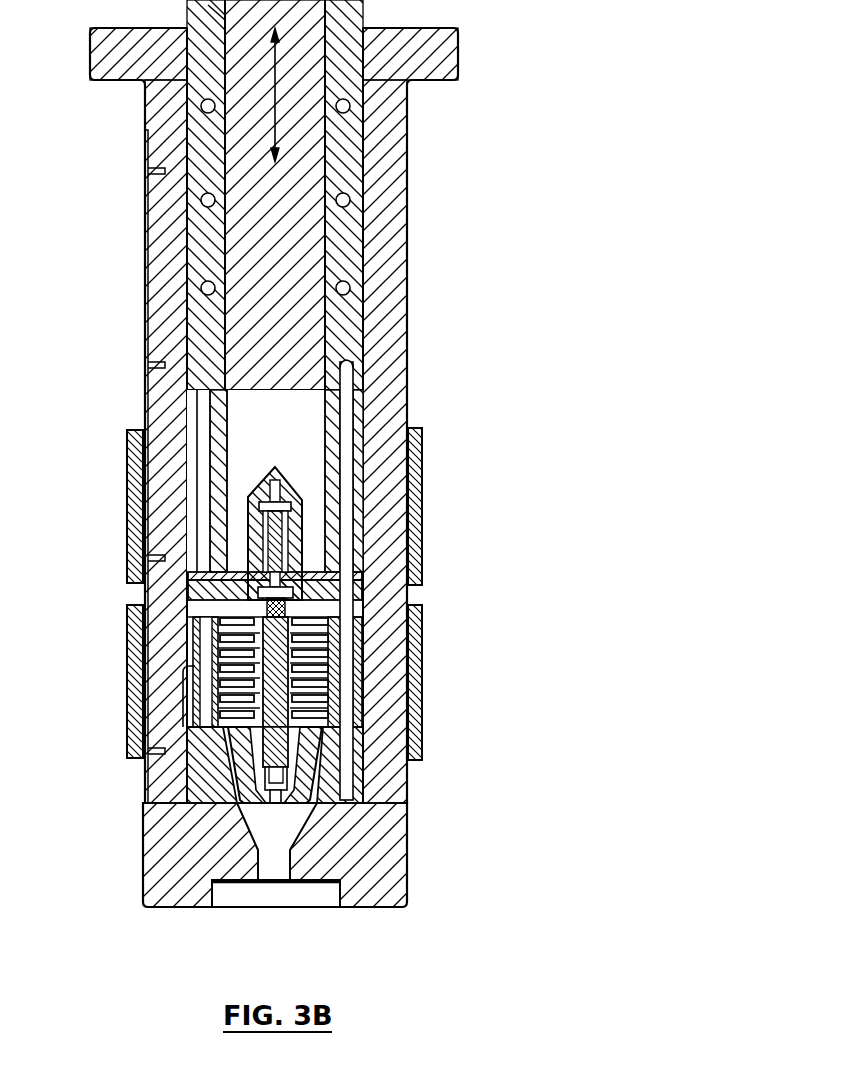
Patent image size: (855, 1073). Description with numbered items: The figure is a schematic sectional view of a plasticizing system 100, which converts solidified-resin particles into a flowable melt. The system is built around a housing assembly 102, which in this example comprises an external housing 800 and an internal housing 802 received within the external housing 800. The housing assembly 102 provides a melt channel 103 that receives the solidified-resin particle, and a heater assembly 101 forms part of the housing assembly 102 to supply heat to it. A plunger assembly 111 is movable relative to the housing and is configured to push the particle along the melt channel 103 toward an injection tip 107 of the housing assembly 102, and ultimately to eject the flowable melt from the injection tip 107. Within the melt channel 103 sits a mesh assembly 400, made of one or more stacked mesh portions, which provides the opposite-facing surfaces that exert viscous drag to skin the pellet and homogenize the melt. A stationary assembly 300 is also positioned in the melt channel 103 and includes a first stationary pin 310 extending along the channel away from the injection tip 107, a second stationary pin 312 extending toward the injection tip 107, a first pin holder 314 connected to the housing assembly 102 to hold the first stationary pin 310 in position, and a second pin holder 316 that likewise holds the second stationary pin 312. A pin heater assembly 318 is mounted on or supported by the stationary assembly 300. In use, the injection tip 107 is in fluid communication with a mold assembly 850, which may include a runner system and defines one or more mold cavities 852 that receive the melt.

The plasticizing system 100 is at (640, 103).
The heater assembly 101 is at (127, 525).
The housing assembly 102 is at (563, 53).
The melt channel 103 is at (240, 432).
The injection tip 107 is at (243, 762).
The plunger assembly 111 is at (293, 248).
The stationary assembly 300 is at (573, 362).
The first stationary pin 310 is at (278, 468).
The second stationary pin 312 is at (303, 743).
The first pin holder 314 is at (365, 580).
The second pin holder 316 is at (365, 597).
The pin heater assembly 318 is at (280, 773).
The mesh assembly 400 is at (142, 677).
The external housing 800 is at (442, 52).
The internal housing 802 is at (350, 127).
The mold assembly 850 is at (140, 843).
The mold cavity 852 is at (228, 890).